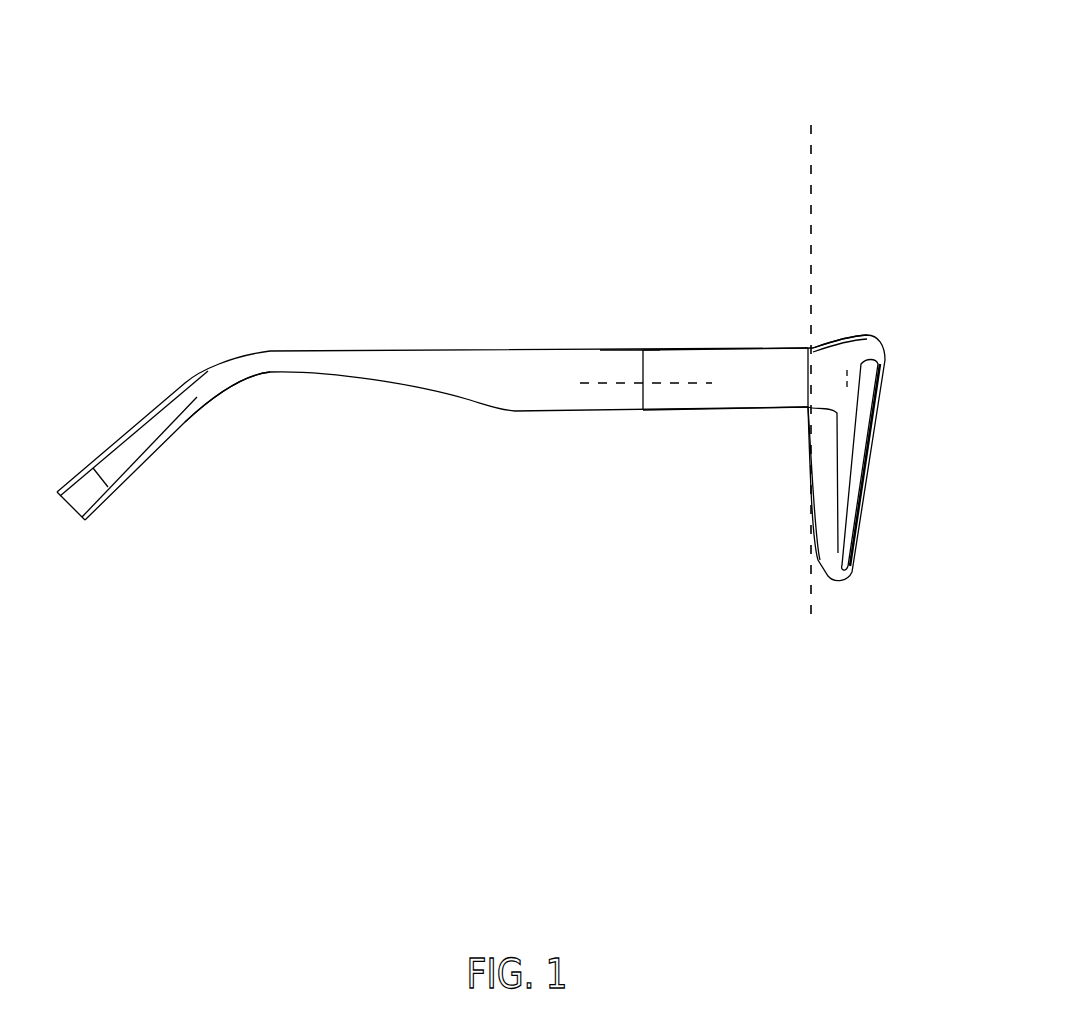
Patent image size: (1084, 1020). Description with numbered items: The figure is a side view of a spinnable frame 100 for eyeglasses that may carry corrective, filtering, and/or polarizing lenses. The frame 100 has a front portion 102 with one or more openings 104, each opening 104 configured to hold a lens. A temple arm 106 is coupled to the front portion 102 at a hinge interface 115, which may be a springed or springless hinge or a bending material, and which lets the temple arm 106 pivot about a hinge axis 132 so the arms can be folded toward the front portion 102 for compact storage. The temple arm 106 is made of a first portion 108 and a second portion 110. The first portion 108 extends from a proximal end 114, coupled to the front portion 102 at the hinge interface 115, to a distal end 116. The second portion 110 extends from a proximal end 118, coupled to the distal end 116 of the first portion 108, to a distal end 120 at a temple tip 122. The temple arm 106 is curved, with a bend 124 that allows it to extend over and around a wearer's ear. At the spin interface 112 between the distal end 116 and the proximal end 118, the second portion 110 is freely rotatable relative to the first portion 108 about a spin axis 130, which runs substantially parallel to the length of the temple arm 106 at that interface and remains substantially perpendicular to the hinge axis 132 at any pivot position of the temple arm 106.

The spinnable frame 100 is at (750, 87).
The front portion 102 is at (872, 350).
The opening 104 is at (853, 480).
The temple arm 106 is at (802, 210).
The first portion 108 is at (738, 392).
The second portion 110 is at (480, 380).
The spin interface 112 is at (635, 430).
The proximal end 114 is at (793, 423).
The hinge interface 115 is at (822, 342).
The distal end 116 is at (658, 342).
The proximal end 118 is at (625, 342).
The distal end 120 is at (98, 543).
The temple tip 122 is at (143, 442).
The bend 124 is at (271, 393).
The spin axis 130 is at (678, 383).
The hinge axis 132 is at (813, 230).